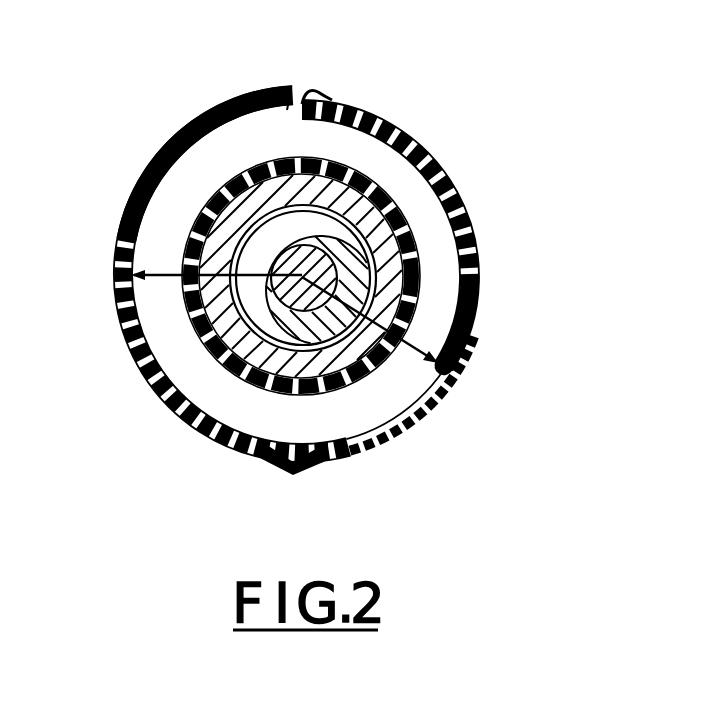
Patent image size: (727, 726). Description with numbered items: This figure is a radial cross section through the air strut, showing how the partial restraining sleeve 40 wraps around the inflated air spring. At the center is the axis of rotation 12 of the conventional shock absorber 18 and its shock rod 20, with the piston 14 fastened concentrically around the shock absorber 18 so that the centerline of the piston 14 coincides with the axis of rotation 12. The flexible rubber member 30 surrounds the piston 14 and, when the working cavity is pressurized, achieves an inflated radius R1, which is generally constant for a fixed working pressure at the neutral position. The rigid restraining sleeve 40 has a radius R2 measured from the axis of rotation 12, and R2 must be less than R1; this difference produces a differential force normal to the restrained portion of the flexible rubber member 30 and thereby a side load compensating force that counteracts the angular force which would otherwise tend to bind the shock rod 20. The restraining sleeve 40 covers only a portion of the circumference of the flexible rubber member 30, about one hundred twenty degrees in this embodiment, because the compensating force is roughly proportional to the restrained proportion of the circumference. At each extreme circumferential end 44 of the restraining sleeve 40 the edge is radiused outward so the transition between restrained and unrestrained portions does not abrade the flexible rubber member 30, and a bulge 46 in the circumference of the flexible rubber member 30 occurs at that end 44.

The axis of rotation 12 is at (275, 378).
The piston 14 is at (390, 247).
The shock absorber 18 is at (345, 240).
The shock rod 20 is at (300, 267).
The flexible rubber member 30 is at (138, 345).
The restraining sleeve 40 is at (457, 368).
The extreme circumferential end 44 is at (320, 92).
The bulge 46 is at (289, 98).
The inflated radius R1 is at (143, 268).
The restraining sleeve radius R2 is at (440, 356).